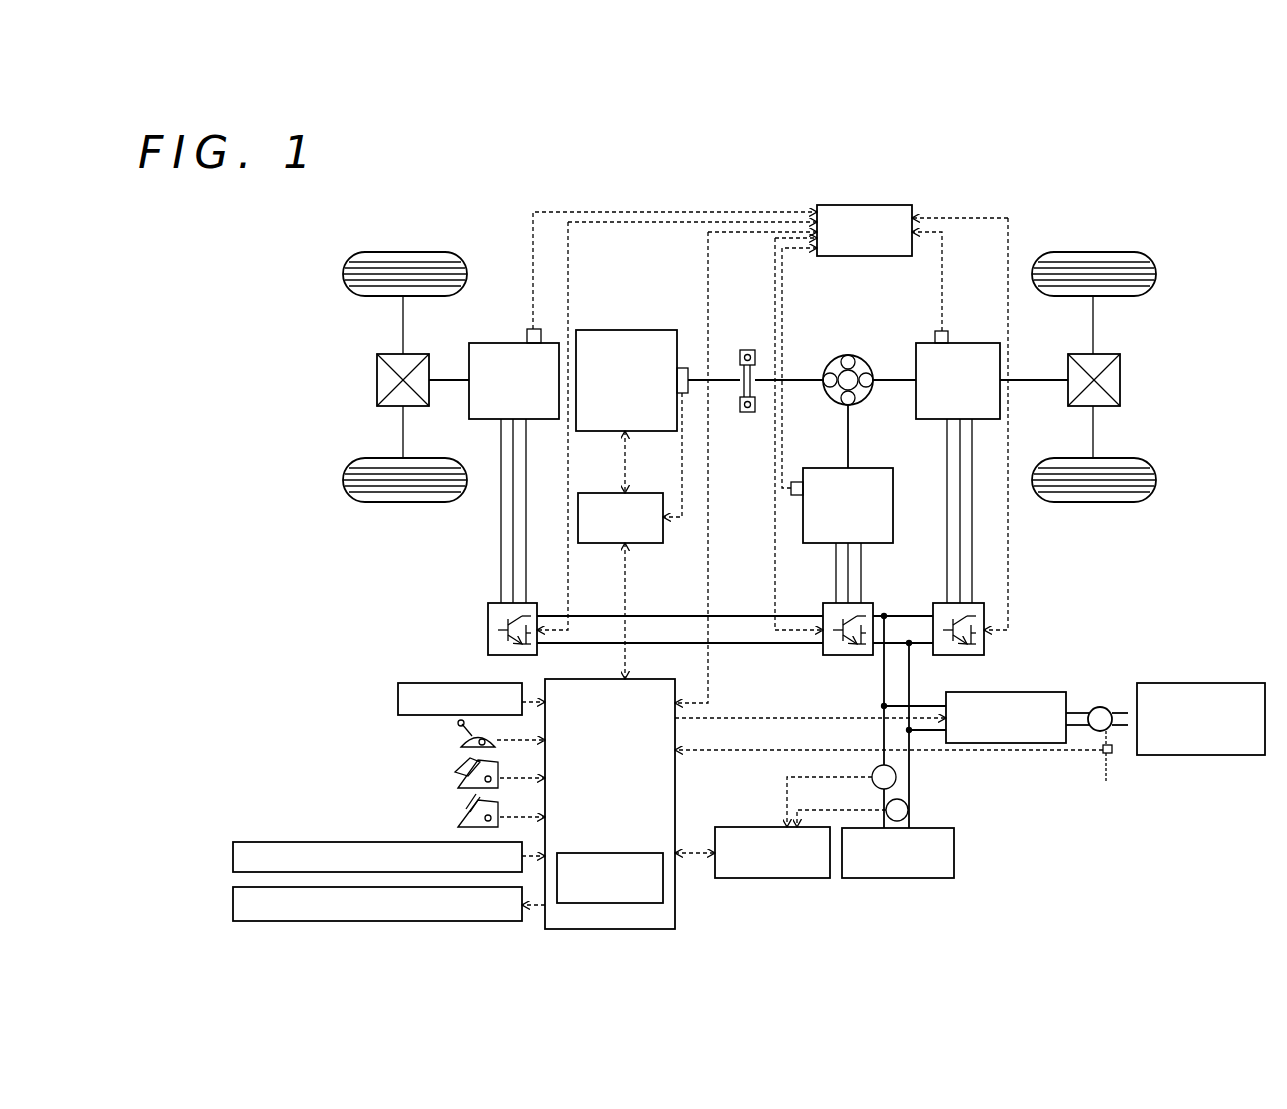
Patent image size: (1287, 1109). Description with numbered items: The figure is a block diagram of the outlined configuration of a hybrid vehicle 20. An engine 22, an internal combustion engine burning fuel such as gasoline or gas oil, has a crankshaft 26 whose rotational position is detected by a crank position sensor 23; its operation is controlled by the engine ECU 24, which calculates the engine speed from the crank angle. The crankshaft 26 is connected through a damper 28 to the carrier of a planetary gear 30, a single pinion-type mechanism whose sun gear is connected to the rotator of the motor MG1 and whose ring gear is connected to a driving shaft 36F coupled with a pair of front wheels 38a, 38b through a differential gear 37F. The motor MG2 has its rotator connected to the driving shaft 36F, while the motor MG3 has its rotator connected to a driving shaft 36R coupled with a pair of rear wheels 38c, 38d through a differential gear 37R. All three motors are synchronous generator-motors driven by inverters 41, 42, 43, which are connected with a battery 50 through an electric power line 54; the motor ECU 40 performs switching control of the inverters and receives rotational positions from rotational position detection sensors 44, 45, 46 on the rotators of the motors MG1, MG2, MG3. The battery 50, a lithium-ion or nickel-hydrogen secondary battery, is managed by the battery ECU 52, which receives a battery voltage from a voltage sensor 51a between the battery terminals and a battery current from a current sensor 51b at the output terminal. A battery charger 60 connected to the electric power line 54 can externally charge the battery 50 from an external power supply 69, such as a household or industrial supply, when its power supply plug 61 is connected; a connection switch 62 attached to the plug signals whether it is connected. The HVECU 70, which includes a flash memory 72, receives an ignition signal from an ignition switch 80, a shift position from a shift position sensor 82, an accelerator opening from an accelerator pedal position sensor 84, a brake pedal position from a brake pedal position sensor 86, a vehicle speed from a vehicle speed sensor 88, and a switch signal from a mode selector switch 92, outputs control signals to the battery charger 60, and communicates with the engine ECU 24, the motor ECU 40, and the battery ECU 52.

The hybrid vehicle 20 is at (997, 180).
The engine 22 is at (626, 330).
The crank position sensor 23 is at (684, 368).
The engine ECU 24 is at (647, 493).
The crankshaft 26 is at (728, 378).
The damper 28 is at (748, 413).
The planetary gear 30 is at (850, 355).
The driving shaft 36F is at (1033, 379).
The differential gear 37F is at (1102, 354).
The front wheel 38a is at (1093, 252).
The front wheel 38b is at (1093, 502).
The driving shaft 36R is at (447, 379).
The differential gear 37R is at (395, 354).
The rear wheel 38c is at (403, 252).
The rear wheel 38d is at (403, 502).
The motor ECU 40 is at (884, 205).
The inverter 41 is at (868, 603).
The inverter 42 is at (975, 603).
The inverter 43 is at (488, 620).
The rotational position detection sensor 44 is at (798, 482).
The rotational position detection sensor 45 is at (938, 331).
The rotational position detection sensor 46 is at (530, 329).
The battery 50 is at (954, 856).
The voltage sensor 51a is at (908, 812).
The current sensor 51b is at (896, 779).
The battery ECU 52 is at (765, 826).
The electric power line 54 is at (909, 683).
The battery charger 60 is at (1043, 692).
The power supply plug 61 is at (1107, 707).
The connection switch 62 is at (898, 774).
The external power supply 69 is at (1162, 683).
The HVECU 70 is at (675, 803).
The flash memory 72 is at (663, 878).
The ignition switch 80 is at (398, 699).
The shift position sensor 82 is at (460, 741).
The accelerator pedal position sensor 84 is at (458, 781).
The brake pedal position sensor 86 is at (458, 819).
The vehicle speed sensor 88 is at (233, 857).
The mode selector switch 92 is at (233, 905).
The motor MG1 is at (872, 468).
The motor MG2 is at (968, 343).
The motor MG3 is at (468, 417).